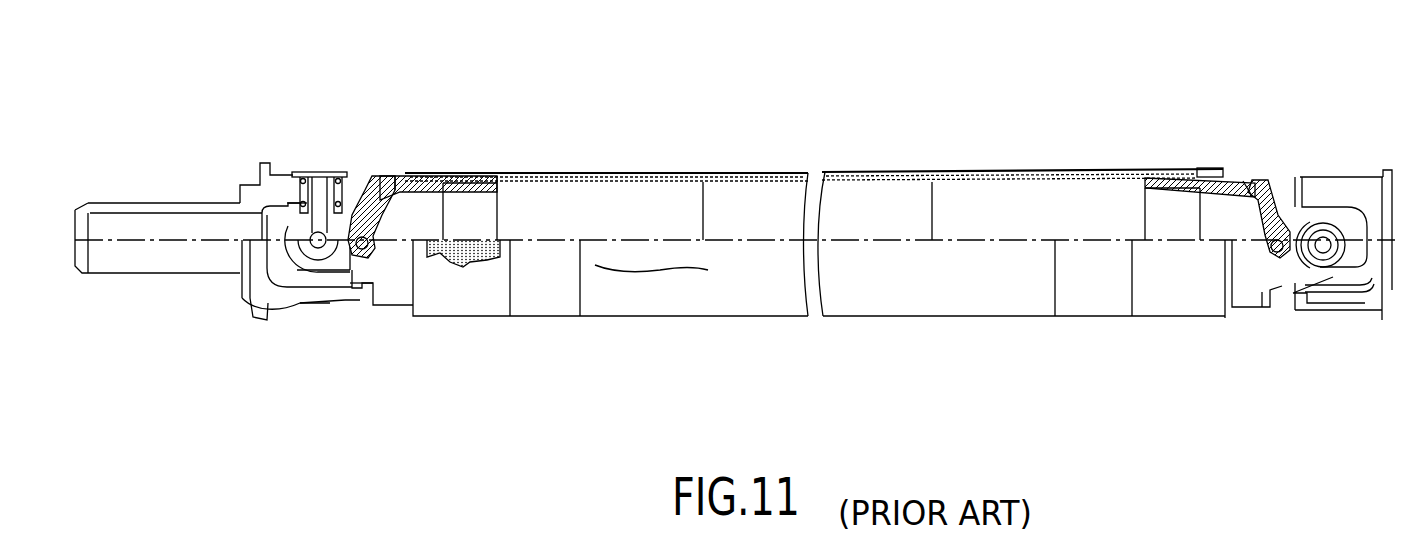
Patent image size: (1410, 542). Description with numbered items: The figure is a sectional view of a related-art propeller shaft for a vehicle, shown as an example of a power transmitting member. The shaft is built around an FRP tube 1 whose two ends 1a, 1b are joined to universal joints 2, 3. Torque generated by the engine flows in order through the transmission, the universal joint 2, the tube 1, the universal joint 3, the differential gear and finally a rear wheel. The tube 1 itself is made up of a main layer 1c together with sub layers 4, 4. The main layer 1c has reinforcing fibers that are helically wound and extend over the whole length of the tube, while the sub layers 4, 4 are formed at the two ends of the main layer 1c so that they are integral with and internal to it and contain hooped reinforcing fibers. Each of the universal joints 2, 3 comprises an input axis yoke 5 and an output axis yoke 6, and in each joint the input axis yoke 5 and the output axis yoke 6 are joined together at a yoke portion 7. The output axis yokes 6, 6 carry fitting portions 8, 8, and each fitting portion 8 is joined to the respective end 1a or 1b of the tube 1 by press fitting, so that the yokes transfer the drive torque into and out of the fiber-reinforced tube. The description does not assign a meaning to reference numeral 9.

The FRP tube 1 is at (816, 184).
The end of the tube 1a is at (457, 166).
The end of the tube 1b is at (1180, 168).
The main layer 1c is at (686, 172).
The universal joint 2 is at (284, 158).
The universal joint 3 is at (1345, 158).
The sub layer 4 is at (500, 168).
The input axis yoke 5 is at (354, 172).
The output axis yoke 6 is at (328, 297).
The yoke portion 7 is at (368, 178).
The fitting portion 8 is at (437, 173).
The seal 9 is at (405, 176).